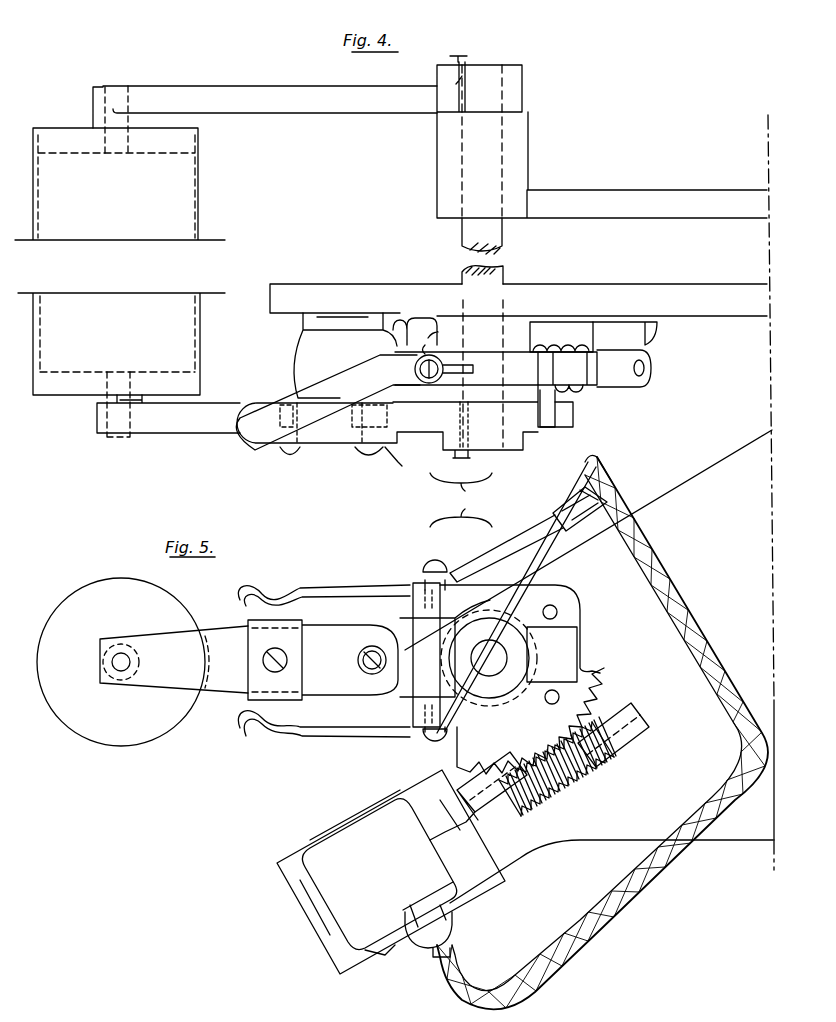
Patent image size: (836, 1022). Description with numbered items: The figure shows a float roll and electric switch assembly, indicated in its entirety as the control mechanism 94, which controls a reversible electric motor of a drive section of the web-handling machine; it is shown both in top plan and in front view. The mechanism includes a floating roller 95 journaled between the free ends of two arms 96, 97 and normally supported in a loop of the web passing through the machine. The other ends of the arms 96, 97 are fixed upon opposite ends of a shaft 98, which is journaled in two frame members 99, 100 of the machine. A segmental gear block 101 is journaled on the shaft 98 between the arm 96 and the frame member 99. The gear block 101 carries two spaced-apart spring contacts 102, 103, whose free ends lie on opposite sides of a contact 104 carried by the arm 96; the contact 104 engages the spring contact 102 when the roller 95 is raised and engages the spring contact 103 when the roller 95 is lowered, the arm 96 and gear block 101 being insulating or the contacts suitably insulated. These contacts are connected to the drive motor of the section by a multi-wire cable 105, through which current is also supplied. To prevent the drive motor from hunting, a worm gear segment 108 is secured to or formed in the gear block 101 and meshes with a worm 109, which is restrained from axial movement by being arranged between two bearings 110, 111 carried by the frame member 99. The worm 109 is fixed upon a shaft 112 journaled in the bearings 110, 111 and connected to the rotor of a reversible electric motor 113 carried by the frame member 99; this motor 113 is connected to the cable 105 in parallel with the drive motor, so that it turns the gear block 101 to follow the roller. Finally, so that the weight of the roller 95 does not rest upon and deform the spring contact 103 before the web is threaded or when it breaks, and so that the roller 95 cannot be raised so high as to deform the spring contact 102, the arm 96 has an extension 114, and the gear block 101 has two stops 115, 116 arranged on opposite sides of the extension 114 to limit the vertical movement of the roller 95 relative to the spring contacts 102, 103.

In FIG. 4, the control mechanism 94 is at (461, 500).
In FIG. 4, the floating roller 95 is at (120, 261).
In FIG. 5, the floating roller 95 is at (492, 668).
In FIG. 4, the arm 96 is at (168, 404).
In FIG. 5, the arm 96 is at (174, 659).
In FIG. 4, the arm 97 is at (265, 119).
In FIG. 4, the shaft 98 is at (497, 236).
In FIG. 4, the frame member 99 is at (518, 300).
In FIG. 5, the frame member 99 is at (612, 842).
In FIG. 4, the frame member 100 is at (602, 137).
In FIG. 4, the segmental gear block 101 is at (585, 385).
In FIG. 5, the segmental gear block 101 is at (562, 590).
In FIG. 4, the spring contact 102 is at (354, 397).
In FIG. 5, the spring contact 102 is at (365, 573).
In FIG. 5, the spring contact 103 is at (370, 737).
In FIG. 4, the contact 104 is at (337, 454).
In FIG. 5, the contact 104 is at (347, 650).
In FIG. 5, the multi-wire cable 105 is at (650, 545).
In FIG. 5, the worm gear segment 108 is at (604, 668).
In FIG. 4, the worm 109 is at (580, 336).
In FIG. 5, the worm 109 is at (600, 796).
In FIG. 5, the bearing 110 is at (512, 820).
In FIG. 4, the bearing 111 is at (652, 350).
In FIG. 5, the bearing 111 is at (640, 740).
In FIG. 5, the shaft 112 is at (465, 880).
In FIG. 4, the reversible electric motor 113 is at (310, 355).
In FIG. 5, the reversible electric motor 113 is at (391, 872).
In FIG. 5, the extension 114 is at (545, 690).
In FIG. 4, the stop 115 is at (547, 425).
In FIG. 5, the stop 115 is at (555, 610).
In FIG. 5, the stop 116 is at (552, 704).